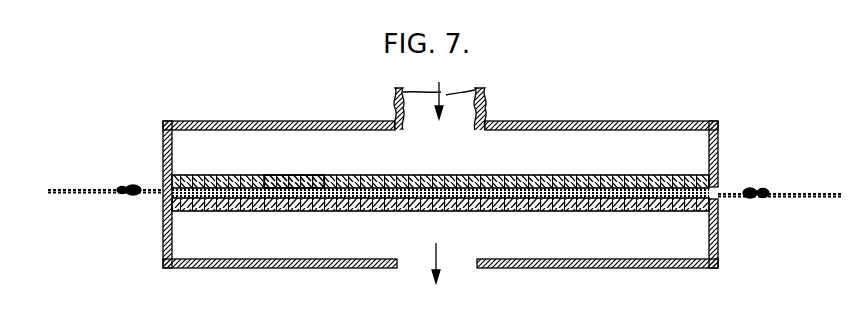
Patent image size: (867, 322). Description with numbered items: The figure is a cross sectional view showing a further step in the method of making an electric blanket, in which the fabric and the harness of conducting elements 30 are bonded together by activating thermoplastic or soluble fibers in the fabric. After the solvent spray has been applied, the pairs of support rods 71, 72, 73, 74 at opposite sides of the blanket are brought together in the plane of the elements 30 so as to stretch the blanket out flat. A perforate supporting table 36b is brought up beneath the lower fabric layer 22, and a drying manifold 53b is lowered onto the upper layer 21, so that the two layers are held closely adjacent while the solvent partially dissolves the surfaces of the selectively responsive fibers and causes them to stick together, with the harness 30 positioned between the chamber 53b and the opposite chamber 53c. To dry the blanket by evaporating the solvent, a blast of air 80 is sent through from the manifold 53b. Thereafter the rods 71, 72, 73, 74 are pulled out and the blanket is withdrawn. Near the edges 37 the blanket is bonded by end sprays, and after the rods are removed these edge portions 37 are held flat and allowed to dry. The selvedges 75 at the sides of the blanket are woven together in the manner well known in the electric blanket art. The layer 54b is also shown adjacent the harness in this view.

The upper fabric layer 21 is at (718, 175).
The lower fabric layer 22 is at (720, 202).
The elements 30 is at (318, 175).
The perforate supporting table 36b is at (548, 213).
The edge portions 37 is at (115, 199).
The drying manifold 53b is at (642, 122).
The chamber 53c is at (641, 268).
The upper layer 54b is at (562, 177).
The support rod 71 is at (133, 185).
The support rod 72 is at (744, 189).
The support rod 73 is at (124, 186).
The support rod 74 is at (765, 191).
The selvedges 75 is at (68, 196).
The blast of air 80 is at (483, 93).